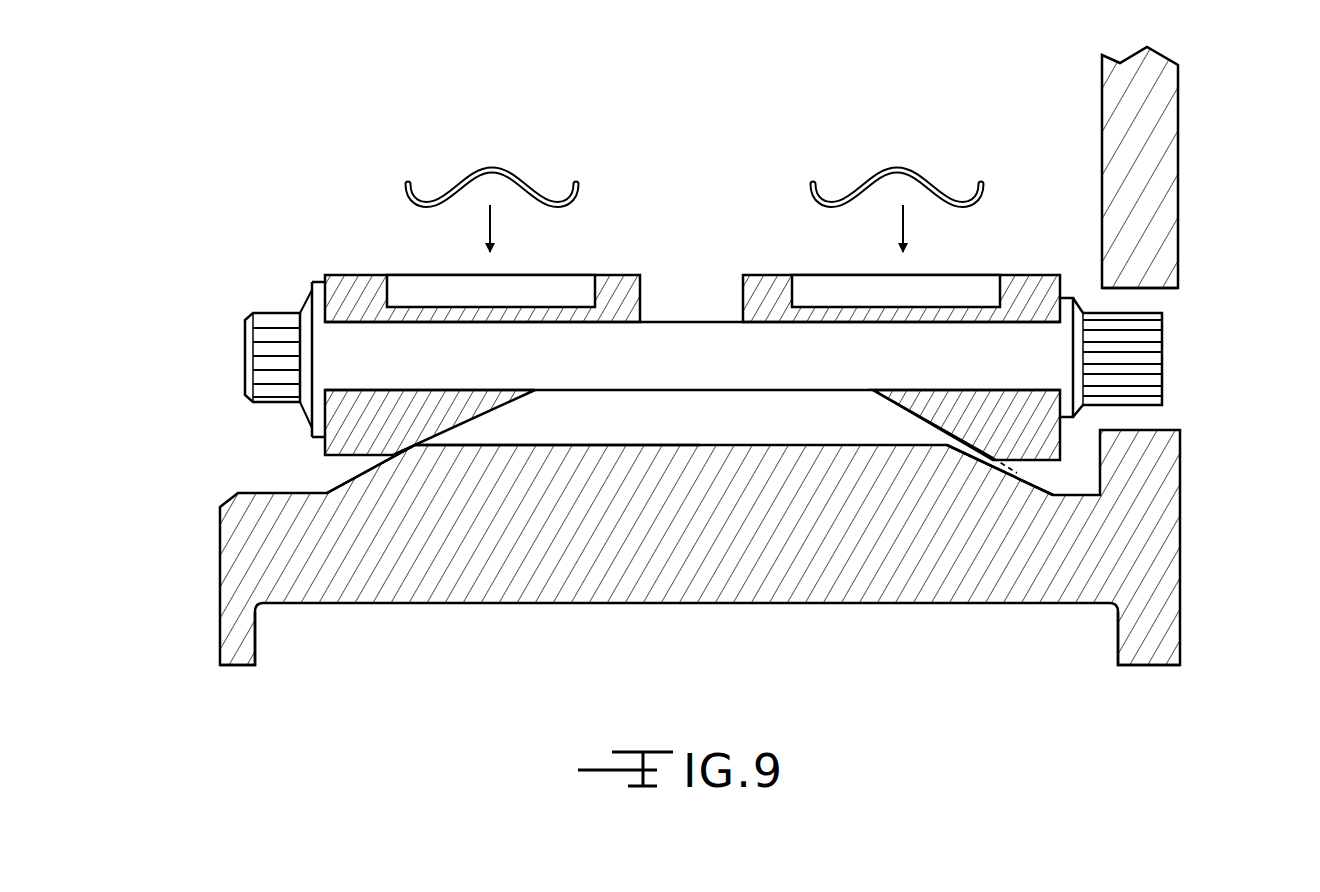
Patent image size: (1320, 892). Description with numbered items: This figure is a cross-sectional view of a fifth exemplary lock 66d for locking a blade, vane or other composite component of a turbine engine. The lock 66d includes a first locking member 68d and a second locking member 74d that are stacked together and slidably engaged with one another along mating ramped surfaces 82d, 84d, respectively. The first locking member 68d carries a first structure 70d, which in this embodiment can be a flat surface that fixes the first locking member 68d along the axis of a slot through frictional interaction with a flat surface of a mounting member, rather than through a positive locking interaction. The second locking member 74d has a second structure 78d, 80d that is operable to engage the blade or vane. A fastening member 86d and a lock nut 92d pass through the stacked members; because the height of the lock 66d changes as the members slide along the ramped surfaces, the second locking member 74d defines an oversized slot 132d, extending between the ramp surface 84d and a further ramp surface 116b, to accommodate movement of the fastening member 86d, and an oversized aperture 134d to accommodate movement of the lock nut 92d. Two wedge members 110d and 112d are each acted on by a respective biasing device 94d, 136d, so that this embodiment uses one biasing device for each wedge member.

The lock 66d is at (1243, 168).
The first locking member 68d is at (270, 183).
The first structure 70d is at (1033, 290).
The second locking member 74d is at (1208, 563).
The second structure 78d is at (1148, 655).
The second structure 80d is at (233, 657).
The ramped surface 82d is at (965, 472).
The ramped surface 84d is at (924, 423).
The fastening member 86d is at (253, 368).
The lock nut 92d is at (1137, 340).
The biasing device 94d is at (903, 170).
The wedge member 110d is at (764, 295).
The wedge member 112d is at (608, 290).
The inclined engagement surface 116b is at (412, 448).
The oversized slot 132d is at (617, 447).
The oversized aperture 134d is at (1165, 290).
The wave spring 136d is at (489, 170).